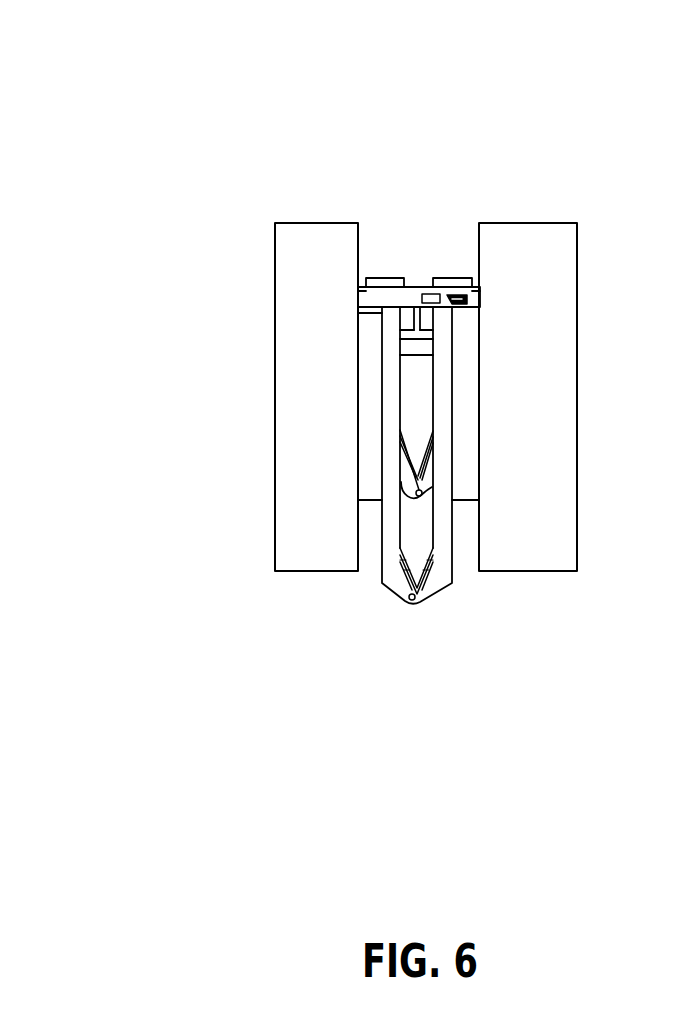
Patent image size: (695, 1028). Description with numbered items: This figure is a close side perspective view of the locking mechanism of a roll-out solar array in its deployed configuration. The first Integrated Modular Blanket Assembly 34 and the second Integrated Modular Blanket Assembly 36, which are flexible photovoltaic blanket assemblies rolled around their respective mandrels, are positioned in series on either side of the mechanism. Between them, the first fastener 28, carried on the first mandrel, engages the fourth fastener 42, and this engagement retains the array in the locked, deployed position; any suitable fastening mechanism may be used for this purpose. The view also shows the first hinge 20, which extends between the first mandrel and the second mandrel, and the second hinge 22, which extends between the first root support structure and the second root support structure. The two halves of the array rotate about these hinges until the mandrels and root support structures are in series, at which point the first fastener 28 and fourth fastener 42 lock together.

The first hinge 20 is at (392, 583).
The second hinge 22 is at (405, 470).
The first fastener 28 is at (387, 295).
The first Integrated Modular Blanket Assembly (IMBA) 34 is at (523, 265).
The second Integrated Modular Blanket Assembly (IMBA) 36 is at (300, 258).
The fourth fastener 42 is at (450, 295).